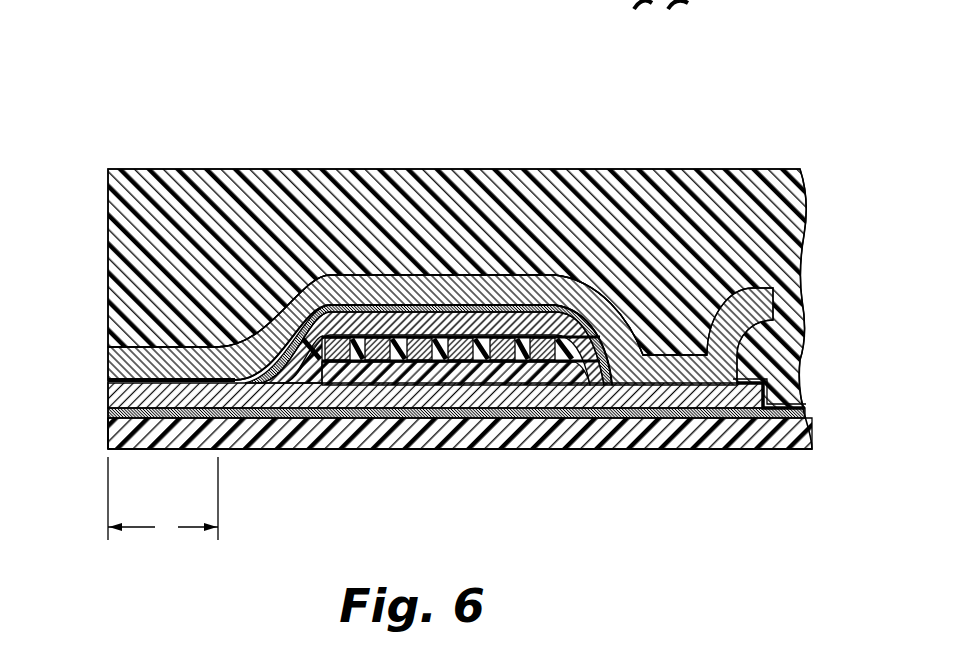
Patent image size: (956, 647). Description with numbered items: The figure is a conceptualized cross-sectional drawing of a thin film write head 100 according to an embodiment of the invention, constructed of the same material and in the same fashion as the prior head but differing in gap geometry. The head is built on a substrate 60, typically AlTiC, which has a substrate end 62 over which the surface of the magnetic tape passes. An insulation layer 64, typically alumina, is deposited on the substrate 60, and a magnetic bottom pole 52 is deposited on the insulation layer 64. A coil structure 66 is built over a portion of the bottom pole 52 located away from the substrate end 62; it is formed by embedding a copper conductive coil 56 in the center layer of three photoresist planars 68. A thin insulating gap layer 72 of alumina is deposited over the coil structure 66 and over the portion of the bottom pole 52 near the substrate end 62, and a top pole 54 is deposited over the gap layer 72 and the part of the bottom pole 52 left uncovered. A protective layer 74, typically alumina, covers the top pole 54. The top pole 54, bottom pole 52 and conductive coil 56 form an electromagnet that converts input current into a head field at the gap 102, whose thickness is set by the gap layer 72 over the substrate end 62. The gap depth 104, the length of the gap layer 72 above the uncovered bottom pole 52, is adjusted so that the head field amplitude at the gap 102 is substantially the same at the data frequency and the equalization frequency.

The thin film write head 100 is at (364, 108).
The protective layer 74 is at (190, 208).
The coil structure 66 is at (253, 282).
The top pole 54 is at (333, 295).
The gap 102 is at (100, 378).
The gap layer 72 is at (413, 308).
The photoresist planars 68 is at (598, 355).
The conductive coil 56 is at (515, 382).
The bottom pole 52 is at (437, 422).
The insulation layer 64 is at (343, 414).
The substrate end 62 is at (108, 432).
The substrate 60 is at (480, 452).
The gap depth 104 is at (174, 566).